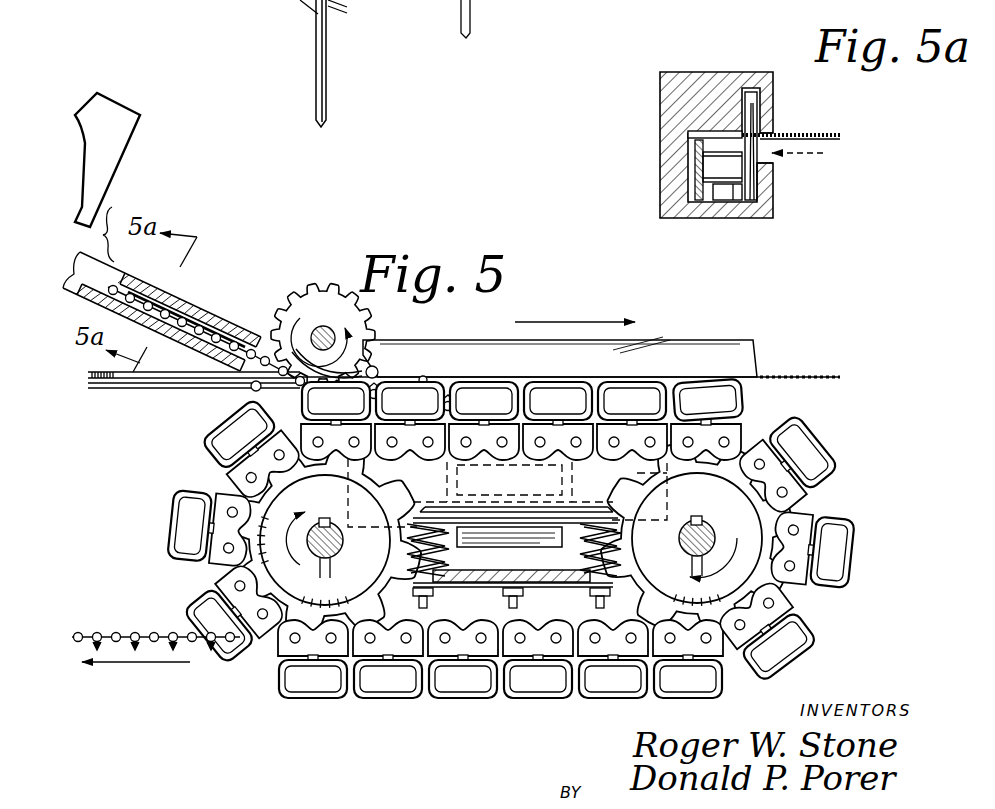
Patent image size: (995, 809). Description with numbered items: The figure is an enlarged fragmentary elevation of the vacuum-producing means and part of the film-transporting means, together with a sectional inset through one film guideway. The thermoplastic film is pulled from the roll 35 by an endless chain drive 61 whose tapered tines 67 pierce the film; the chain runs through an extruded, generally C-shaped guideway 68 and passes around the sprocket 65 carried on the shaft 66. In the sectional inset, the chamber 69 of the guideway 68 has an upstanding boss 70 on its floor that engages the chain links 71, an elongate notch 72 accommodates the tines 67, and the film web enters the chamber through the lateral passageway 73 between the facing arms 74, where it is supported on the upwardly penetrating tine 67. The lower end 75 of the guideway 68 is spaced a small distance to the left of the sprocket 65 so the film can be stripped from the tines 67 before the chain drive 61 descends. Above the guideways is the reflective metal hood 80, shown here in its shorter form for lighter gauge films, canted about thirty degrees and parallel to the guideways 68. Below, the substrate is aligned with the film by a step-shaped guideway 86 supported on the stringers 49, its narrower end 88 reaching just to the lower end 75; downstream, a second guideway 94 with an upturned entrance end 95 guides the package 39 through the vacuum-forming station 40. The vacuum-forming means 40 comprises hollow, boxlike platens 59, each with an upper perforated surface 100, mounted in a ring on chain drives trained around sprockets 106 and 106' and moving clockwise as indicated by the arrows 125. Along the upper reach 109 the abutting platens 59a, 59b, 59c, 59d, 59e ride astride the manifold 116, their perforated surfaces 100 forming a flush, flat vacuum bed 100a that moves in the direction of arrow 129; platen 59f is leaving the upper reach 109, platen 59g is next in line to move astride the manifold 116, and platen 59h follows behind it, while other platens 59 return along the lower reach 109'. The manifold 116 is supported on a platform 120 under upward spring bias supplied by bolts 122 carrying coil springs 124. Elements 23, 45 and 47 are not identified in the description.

In FIG. 5, the support post 23 is at (460, 15).
In FIG. 5, the frame member 47 is at (280, 0).
In FIG. 5, the stringers 49 is at (395, 4).
In FIG. 5, the reflective metal hood 80 is at (118, 117).
In FIG. 5, the guideways 68 is at (203, 347).
In FIG. 5A, the guideways 68 is at (703, 70).
In FIG. 5, the tines 67 is at (180, 322).
In FIG. 5, the roll 35 is at (270, 338).
In FIG. 5A, the roll 35 is at (827, 132).
In FIG. 5, the guideways 86 is at (113, 388).
In FIG. 5, the guide plate 45 is at (730, 367).
In FIG. 5, the package 39 is at (697, 358).
In FIG. 5, the arrow 129 is at (582, 316).
In FIG. 5, the sprocket 65 is at (318, 285).
In FIG. 5, the shaft 66 is at (343, 285).
In FIG. 5, the narrower dimension end 88 is at (247, 357).
In FIG. 5, the endless chain drive 61 is at (467, 403).
In FIG. 5A, the endless chain drive 61 is at (692, 182).
In FIG. 5, the lower end 75 is at (253, 387).
In FIG. 5, the entrance end 95 is at (370, 370).
In FIG. 5, the guideways 94 is at (423, 377).
In FIG. 5, the sprockets 106' is at (319, 574).
In FIG. 5, the sprockets 106 is at (724, 538).
In FIG. 5, the arrows 125 is at (290, 553).
In FIG. 5, the manifold 116 is at (563, 478).
In FIG. 5, the upper horizontal reach 109 is at (511, 432).
In FIG. 5, the lower horizontal reach 109' is at (503, 653).
In FIG. 5, the platform surface 100a is at (559, 367).
In FIG. 5, the upper perforated flat surface 100 is at (500, 702).
In FIG. 5, the platens 59 is at (400, 700).
In FIG. 5, the platen 59a is at (377, 357).
In FIG. 5, the platen 59b is at (430, 394).
In FIG. 5, the platen 59c is at (473, 379).
In FIG. 5, the platen 59d is at (548, 372).
In FIG. 5, the platen 59e is at (693, 375).
In FIG. 5, the platen 59f is at (747, 403).
In FIG. 5, the platen 59g is at (213, 423).
In FIG. 5, the link 59h is at (172, 525).
In FIG. 5, the vacuum-forming station 40 is at (822, 420).
In FIG. 5, the coil springs 124 is at (515, 545).
In FIG. 5, the bolts 122 is at (477, 600).
In FIG. 5, the platform 120 is at (588, 582).
In FIG. 5A, the facing arms 74 is at (768, 123).
In FIG. 5A, the chamber 69 is at (715, 147).
In FIG. 5A, the chain links 71 is at (718, 165).
In FIG. 5A, the upstanding boss 70 is at (723, 188).
In FIG. 5A, the elongate notch 72 is at (747, 98).
In FIG. 5A, the lateral passageway 73 is at (818, 151).